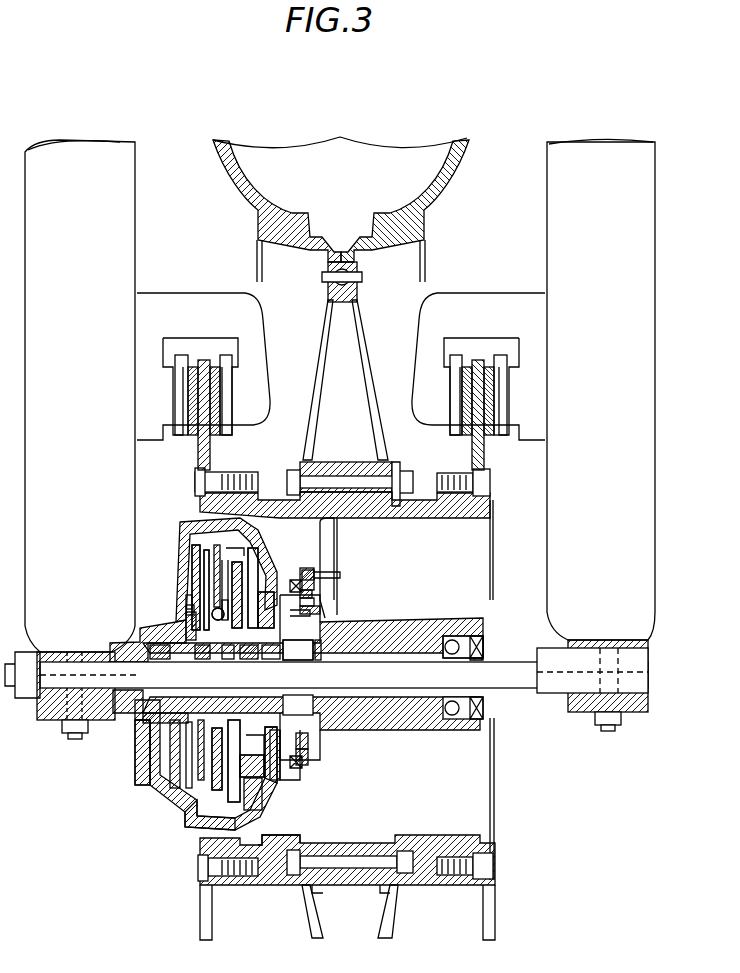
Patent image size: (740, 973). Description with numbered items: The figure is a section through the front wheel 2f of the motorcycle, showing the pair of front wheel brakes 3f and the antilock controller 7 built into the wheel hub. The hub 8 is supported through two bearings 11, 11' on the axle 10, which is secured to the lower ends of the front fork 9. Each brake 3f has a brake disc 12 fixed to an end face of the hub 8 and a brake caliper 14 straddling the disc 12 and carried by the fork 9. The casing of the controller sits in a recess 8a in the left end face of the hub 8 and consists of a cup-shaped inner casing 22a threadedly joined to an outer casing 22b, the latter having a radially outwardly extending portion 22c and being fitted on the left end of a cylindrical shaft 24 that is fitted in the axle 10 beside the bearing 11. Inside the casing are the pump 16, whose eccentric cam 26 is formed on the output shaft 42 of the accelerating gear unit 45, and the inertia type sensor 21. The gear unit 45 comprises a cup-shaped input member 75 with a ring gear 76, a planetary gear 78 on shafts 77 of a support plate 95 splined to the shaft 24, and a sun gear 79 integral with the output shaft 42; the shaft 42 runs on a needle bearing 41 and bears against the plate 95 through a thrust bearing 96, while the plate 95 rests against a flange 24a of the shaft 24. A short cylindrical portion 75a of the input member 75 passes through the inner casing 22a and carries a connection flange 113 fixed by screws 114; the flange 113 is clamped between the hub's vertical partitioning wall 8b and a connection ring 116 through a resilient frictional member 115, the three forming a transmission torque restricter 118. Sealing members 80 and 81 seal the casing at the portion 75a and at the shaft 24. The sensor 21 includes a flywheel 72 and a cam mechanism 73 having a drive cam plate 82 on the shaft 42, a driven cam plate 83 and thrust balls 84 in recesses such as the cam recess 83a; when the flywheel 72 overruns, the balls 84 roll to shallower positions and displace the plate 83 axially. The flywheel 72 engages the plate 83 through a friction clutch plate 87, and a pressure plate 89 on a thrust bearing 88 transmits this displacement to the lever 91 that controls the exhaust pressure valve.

The front wheel 2f is at (434, 217).
The front wheel brake 3f is at (187, 270).
The antilock controller 7 is at (175, 519).
The hub 8 is at (343, 462).
The recess 8a is at (333, 545).
The vertical partitioning wall 8b is at (336, 560).
The front fork 9 is at (125, 178).
The axle 10 is at (326, 673).
The bearing 11 is at (315, 663).
The bearing 11' is at (463, 658).
The brake disc 12 is at (203, 366).
The brake caliper 14 is at (263, 333).
The pump 16 is at (136, 766).
The inertia type sensor 21 is at (190, 574).
The inner casing 22a is at (295, 778).
The outer casing 22b is at (192, 826).
The radially outwardly extending portion 22c is at (140, 834).
The cylindrical shaft 24 is at (313, 677).
The flange 24a is at (272, 665).
The eccentric cam 26 is at (148, 720).
The needle bearing 41 is at (159, 666).
The output shaft 42 is at (201, 666).
The accelerating gear unit 45 is at (270, 838).
The flywheel 72 is at (199, 583).
The cam mechanism 73 is at (216, 583).
The input member 75 is at (280, 802).
The short cylindrical portion 75a is at (318, 745).
The ring gear 76 is at (238, 590).
The shaft 77 is at (290, 785).
The planetary gear 78 is at (230, 793).
The sun gear 79 is at (247, 666).
The sealing member 80 is at (318, 760).
The sealing member 81 is at (298, 663).
The drive cam plate 82 is at (258, 612).
The driven cam plate 83 is at (235, 758).
The cam recess 83a is at (218, 608).
The thrust ball 84 is at (223, 605).
The friction clutch plate 87 is at (222, 761).
The thrust bearing 88 is at (186, 598).
The pressure plate 89 is at (187, 609).
The lever 91 is at (186, 620).
The support plate 95 is at (245, 588).
The thrust bearing 96 is at (225, 666).
The connection flange 113 is at (320, 601).
The screw 114 is at (322, 613).
The resilient frictional member 115 is at (320, 590).
The connection ring 116 is at (312, 568).
The transmission torque restricter 118 is at (300, 560).